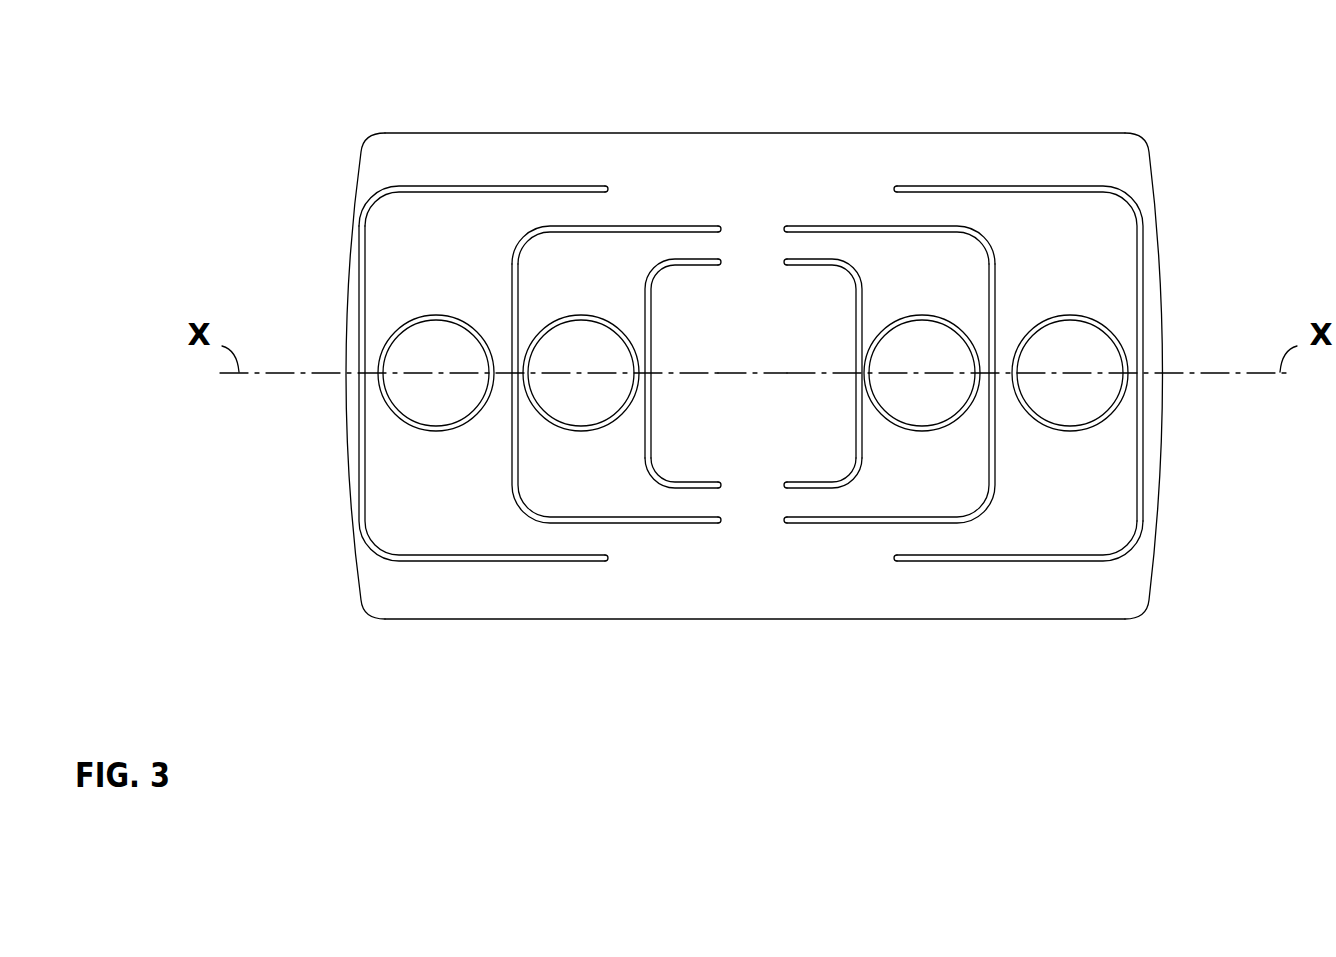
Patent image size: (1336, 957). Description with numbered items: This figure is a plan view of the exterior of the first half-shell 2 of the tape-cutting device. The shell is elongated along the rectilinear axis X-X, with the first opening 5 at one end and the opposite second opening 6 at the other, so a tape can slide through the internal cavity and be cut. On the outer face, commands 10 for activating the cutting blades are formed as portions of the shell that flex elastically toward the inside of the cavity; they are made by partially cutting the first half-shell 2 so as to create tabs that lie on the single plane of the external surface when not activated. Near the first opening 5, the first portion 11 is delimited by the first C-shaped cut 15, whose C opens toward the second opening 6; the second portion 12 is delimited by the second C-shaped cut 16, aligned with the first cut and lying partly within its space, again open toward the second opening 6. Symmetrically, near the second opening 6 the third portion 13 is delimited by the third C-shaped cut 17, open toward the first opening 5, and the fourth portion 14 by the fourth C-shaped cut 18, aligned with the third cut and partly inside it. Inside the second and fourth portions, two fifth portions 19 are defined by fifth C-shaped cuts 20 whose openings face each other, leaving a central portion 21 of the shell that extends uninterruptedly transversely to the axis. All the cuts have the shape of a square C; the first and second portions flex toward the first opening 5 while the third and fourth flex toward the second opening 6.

The first half-shell 2 is at (811, 132).
The first opening 5 is at (346, 452).
The second opening 6 is at (1162, 458).
The commands 10 is at (578, 357).
The first portion 11 is at (420, 268).
The second portion 12 is at (578, 480).
The third portion 13 is at (1057, 277).
The fourth portion 14 is at (938, 475).
The first C-shaped cut 15 is at (473, 186).
The second C-shaped cut 16 is at (642, 226).
The third C-shaped cut 17 is at (1097, 557).
The fourth C-shaped cut 18 is at (907, 228).
The fifth portions 19 is at (702, 433).
The fifth C-shaped cuts 20 is at (677, 487).
The central portion 21 is at (752, 331).